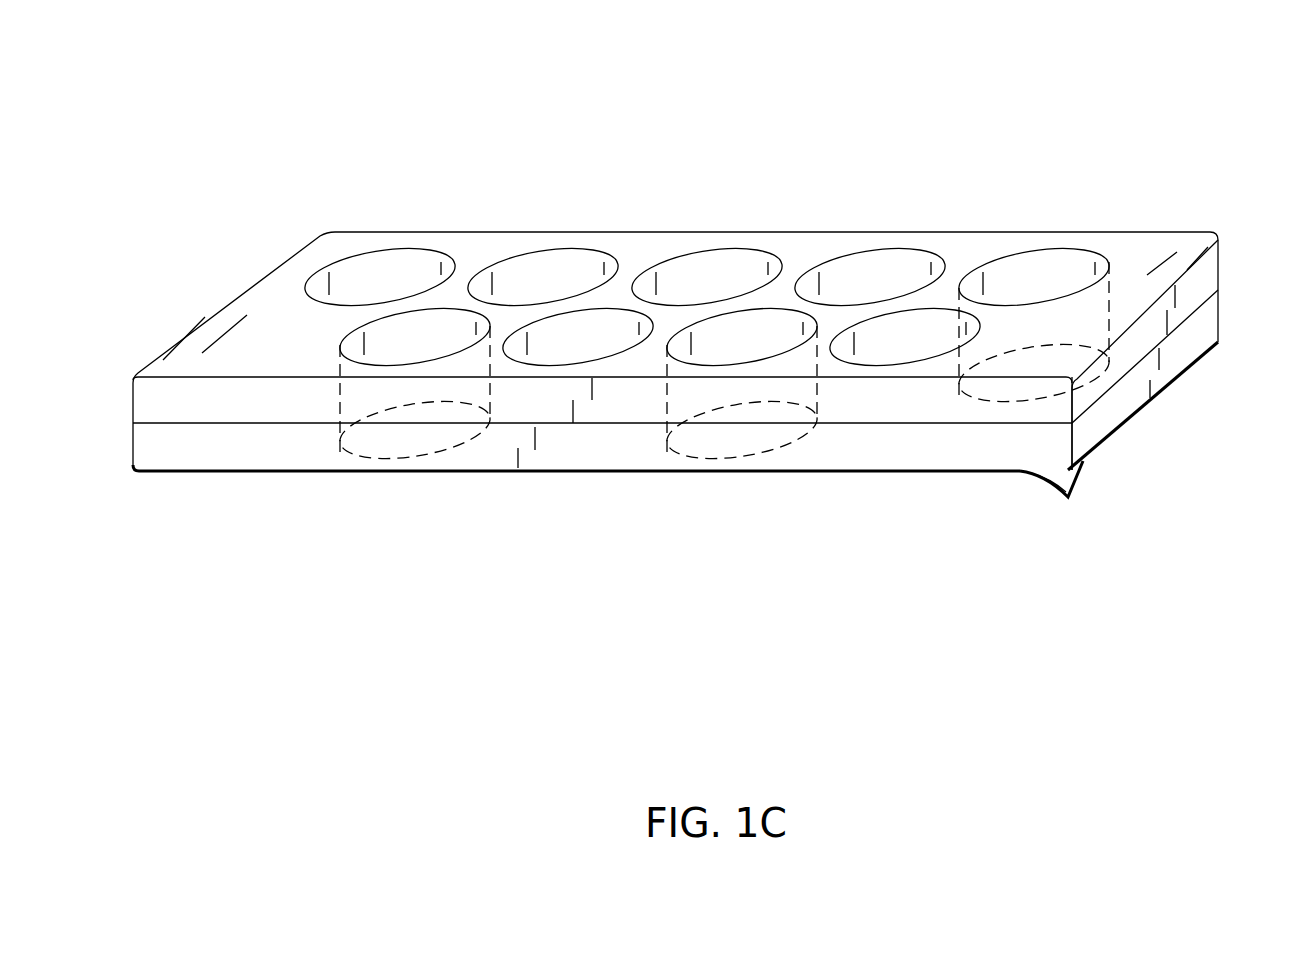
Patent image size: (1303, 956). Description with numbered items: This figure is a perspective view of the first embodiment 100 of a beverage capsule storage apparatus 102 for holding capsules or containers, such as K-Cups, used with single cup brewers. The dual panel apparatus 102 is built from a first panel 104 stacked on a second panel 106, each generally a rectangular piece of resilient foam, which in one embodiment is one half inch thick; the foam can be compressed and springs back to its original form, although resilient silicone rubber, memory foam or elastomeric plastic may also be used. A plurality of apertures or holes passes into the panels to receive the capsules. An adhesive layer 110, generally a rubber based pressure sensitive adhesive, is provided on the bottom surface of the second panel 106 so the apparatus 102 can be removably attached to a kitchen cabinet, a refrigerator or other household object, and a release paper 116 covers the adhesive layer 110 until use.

The embodiment 100 is at (300, 130).
The apparatus 102 is at (526, 213).
The first panel 104 is at (310, 333).
The second panel 106 is at (1182, 368).
The adhesive layer 110 is at (1078, 478).
The release paper 116 is at (1063, 497).